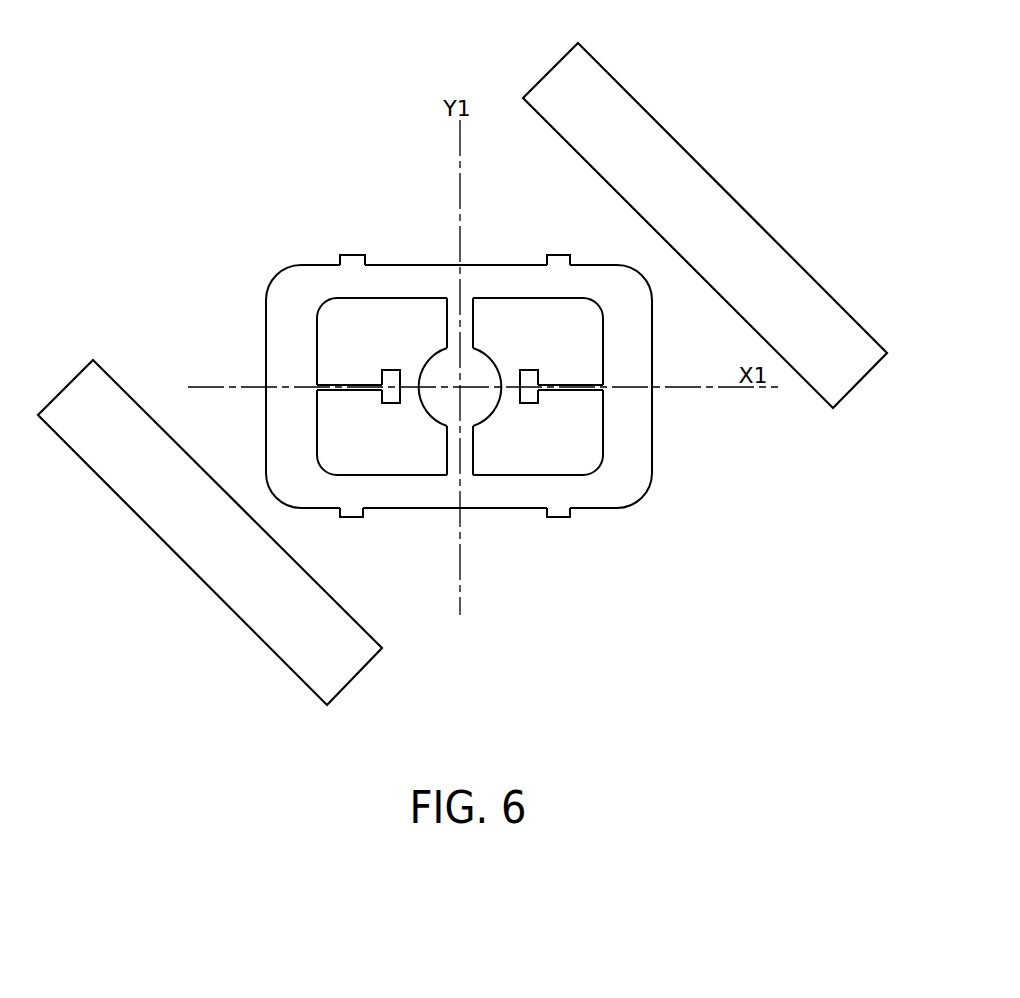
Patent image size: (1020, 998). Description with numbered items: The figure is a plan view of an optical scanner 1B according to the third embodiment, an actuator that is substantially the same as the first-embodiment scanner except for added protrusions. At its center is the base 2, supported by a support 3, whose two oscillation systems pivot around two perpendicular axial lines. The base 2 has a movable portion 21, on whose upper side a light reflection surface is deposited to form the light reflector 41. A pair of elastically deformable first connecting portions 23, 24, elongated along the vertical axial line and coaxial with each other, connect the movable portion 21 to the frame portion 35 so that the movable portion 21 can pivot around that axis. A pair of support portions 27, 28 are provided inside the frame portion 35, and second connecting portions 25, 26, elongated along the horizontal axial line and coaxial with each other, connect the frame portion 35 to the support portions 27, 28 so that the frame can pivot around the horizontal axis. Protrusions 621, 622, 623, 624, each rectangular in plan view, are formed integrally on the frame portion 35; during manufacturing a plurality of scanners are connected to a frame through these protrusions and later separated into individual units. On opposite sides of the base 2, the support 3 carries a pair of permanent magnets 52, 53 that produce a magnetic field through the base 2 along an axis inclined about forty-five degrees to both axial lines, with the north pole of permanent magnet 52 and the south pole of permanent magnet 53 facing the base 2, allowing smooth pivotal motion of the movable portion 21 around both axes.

The optical scanner 1B is at (722, 551).
The base 2 is at (578, 511).
The support 3 is at (402, 426).
The movable portion 21 is at (443, 406).
The light reflector 41 is at (470, 398).
The first connecting portion 23 is at (469, 313).
The first connecting portion 24 is at (465, 455).
The second connecting portion 25 is at (568, 381).
The second connecting portion 26 is at (351, 381).
The support portion 27 is at (528, 369).
The support portion 28 is at (389, 369).
The frame portion 35 is at (622, 449).
The permanent magnet 52 is at (762, 241).
The permanent magnet 53 is at (245, 605).
The protrusion 621 is at (557, 262).
The protrusion 622 is at (353, 262).
The protrusion 623 is at (557, 518).
The protrusion 624 is at (350, 518).